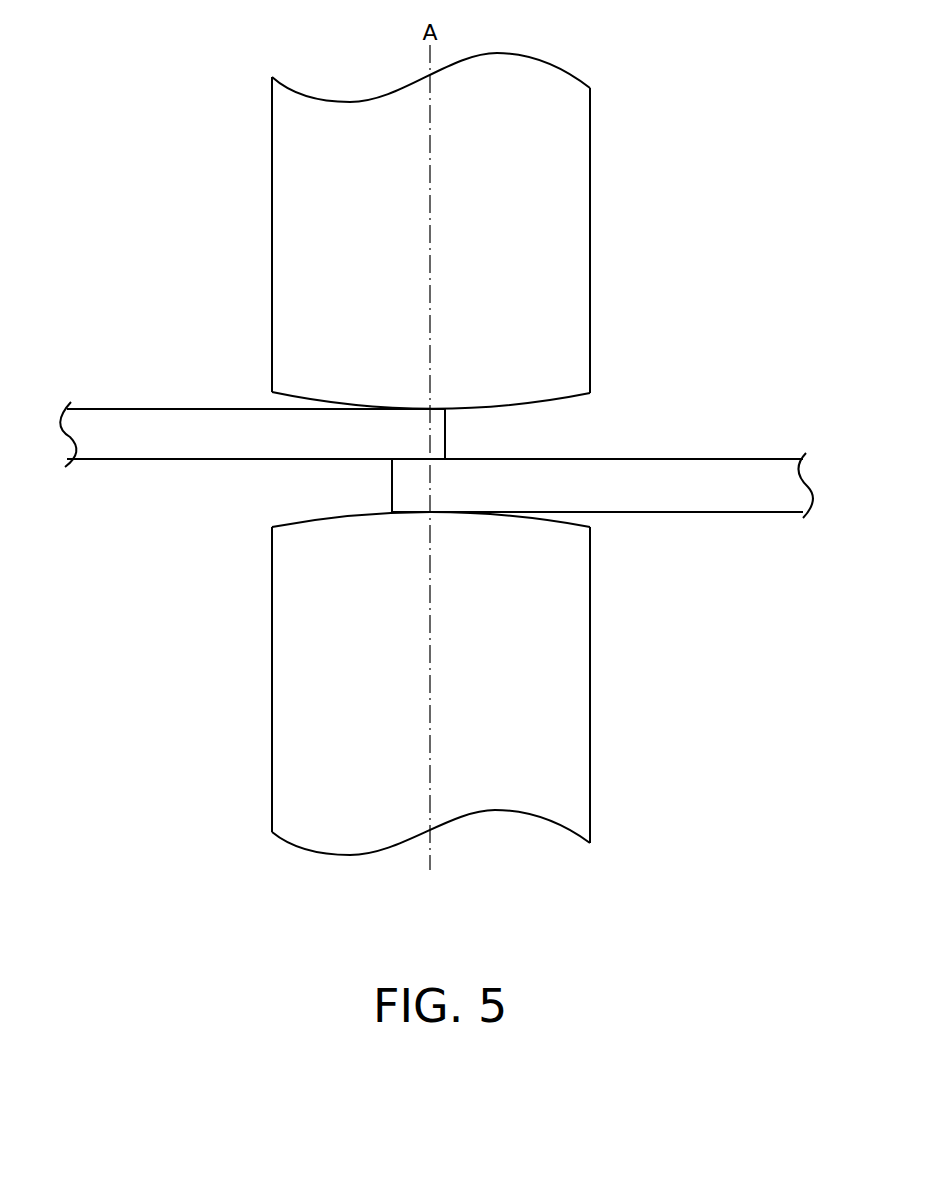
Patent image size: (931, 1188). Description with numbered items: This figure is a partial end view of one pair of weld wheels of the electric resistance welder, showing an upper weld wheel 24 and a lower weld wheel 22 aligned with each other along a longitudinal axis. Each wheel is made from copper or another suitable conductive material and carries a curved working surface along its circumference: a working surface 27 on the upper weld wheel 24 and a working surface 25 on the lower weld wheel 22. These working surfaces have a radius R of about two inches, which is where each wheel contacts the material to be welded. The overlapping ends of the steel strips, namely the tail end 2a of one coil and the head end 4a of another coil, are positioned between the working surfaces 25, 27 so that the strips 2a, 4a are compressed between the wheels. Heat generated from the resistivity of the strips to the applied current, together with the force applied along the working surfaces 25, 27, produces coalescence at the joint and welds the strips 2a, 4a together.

The upper weld wheel 24 is at (550, 245).
The lower weld wheel 22 is at (557, 678).
The tail end 2a is at (183, 435).
The head end 4a is at (737, 488).
The curved working surface 27 is at (508, 407).
The curved working surface 25 is at (318, 518).
The roller radius R is at (338, 398).